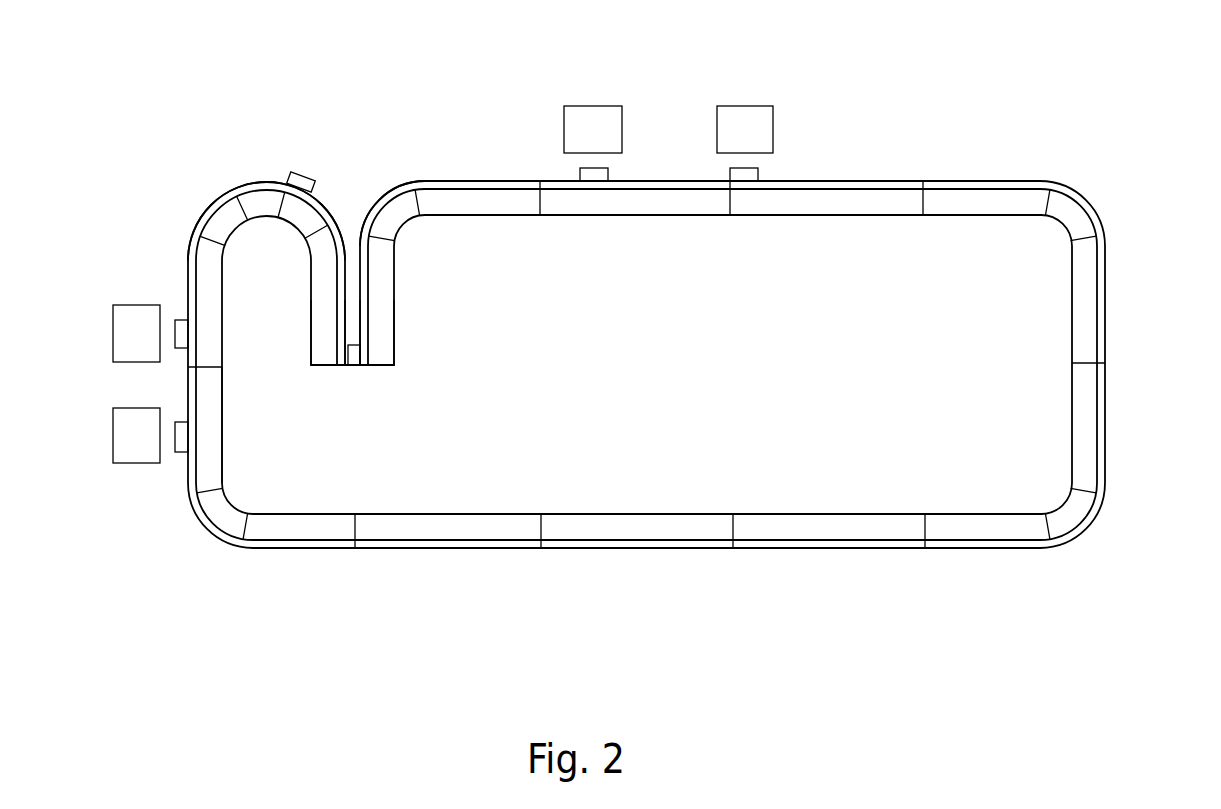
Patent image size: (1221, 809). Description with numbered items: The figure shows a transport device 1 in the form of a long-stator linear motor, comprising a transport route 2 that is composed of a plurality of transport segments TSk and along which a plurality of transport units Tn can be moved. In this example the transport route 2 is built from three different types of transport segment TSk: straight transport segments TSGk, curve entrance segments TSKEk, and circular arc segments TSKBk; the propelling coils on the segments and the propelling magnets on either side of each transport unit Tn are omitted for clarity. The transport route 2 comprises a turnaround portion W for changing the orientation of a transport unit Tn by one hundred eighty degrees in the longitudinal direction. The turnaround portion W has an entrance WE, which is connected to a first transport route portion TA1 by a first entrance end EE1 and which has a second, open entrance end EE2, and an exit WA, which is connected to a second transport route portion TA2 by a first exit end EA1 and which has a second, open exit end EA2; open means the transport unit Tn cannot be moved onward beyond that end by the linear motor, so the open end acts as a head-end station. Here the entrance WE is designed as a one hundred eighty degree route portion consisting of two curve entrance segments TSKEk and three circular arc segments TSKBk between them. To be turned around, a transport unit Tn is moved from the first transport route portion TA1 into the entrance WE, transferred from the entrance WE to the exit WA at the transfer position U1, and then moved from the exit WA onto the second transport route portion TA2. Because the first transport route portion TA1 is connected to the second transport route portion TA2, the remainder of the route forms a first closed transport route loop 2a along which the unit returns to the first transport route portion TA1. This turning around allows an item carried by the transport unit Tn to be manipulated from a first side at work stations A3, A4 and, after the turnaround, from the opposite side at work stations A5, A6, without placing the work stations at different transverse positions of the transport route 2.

The transport device 1 is at (922, 103).
The transport route 2 is at (893, 568).
The first closed transport route loop 2a is at (1070, 513).
The turnaround portion W is at (349, 181).
The first transport route portion TA1 is at (232, 184).
The second transport route portion TA2 is at (404, 182).
The transport unit Tn is at (292, 172).
The curve entrance segment TSKEk is at (995, 525).
The circular arc segment TSKBk is at (1120, 580).
The straight transport segment TSGk is at (615, 530).
The transport segment TSk is at (310, 528).
The entrance WE is at (307, 307).
The exit WA is at (418, 267).
The first entrance end EE1 is at (237, 385).
The second entrance end EE2 is at (327, 372).
The first exit end EA1 is at (510, 225).
The second exit end EA2 is at (378, 372).
The transfer position U1 is at (405, 348).
The work station A3 is at (136, 435).
The work station A4 is at (136, 333).
The work station A5 is at (593, 129).
The work station A6 is at (745, 129).